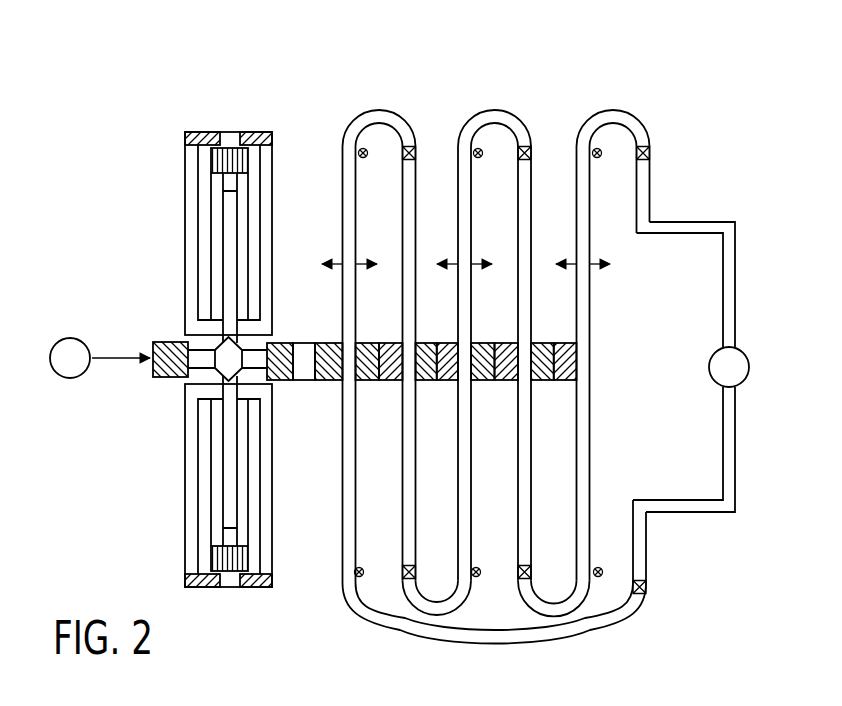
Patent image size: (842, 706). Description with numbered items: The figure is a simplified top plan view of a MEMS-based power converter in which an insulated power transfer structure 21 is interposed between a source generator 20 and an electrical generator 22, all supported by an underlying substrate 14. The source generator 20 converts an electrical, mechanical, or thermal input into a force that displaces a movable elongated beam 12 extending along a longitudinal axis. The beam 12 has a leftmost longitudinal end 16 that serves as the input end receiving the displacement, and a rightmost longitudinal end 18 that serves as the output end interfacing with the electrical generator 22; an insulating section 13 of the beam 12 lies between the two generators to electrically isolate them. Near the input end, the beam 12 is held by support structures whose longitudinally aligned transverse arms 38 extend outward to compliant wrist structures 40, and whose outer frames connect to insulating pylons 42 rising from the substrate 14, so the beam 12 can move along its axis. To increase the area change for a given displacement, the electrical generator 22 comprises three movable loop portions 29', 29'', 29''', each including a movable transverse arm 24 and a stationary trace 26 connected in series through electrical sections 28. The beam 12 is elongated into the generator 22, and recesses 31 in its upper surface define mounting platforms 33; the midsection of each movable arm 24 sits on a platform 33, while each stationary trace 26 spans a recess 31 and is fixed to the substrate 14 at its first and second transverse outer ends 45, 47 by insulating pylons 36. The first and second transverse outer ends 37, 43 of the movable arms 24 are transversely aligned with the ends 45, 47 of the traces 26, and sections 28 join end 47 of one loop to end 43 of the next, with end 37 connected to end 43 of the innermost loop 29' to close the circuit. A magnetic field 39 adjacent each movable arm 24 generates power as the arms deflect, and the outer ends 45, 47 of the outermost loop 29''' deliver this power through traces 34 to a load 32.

The beam 12 is at (281, 381).
The section 13 is at (303, 381).
The substrate 14 is at (318, 649).
The leftmost longitudinal end 16 is at (165, 342).
The rightmost longitudinal end 18 is at (578, 367).
The source generator 20 is at (73, 338).
The power transfer structure 21 is at (303, 188).
The electrical generator 22 is at (692, 44).
The movable transverse arm 24 is at (357, 190).
The stationary trace 26 is at (416, 178).
The electrical sections 28 is at (392, 112).
The first loop portion 29' is at (379, 317).
The second loop portion 29'' is at (495, 316).
The third loop portion 29''' is at (615, 316).
The recess 31 is at (418, 345).
The load 32 is at (745, 354).
The mounting platform 33 is at (332, 343).
The trace 34 is at (727, 222).
The insulating pylon 36 is at (414, 148).
The first transverse outer end 37 is at (358, 117).
The transverse arm 38 is at (225, 258).
The magnetic field 39 is at (367, 154).
The wrist structure 40 is at (218, 132).
The insulating pylon 42 is at (233, 132).
The second transverse outer end 43 is at (342, 578).
The first transverse outer end 45 is at (419, 168).
The second transverse outer end 47 is at (401, 566).